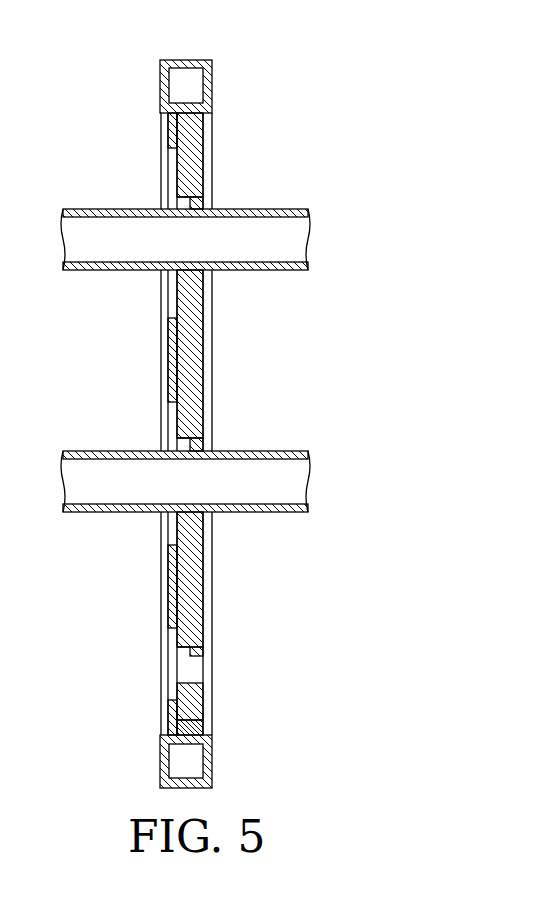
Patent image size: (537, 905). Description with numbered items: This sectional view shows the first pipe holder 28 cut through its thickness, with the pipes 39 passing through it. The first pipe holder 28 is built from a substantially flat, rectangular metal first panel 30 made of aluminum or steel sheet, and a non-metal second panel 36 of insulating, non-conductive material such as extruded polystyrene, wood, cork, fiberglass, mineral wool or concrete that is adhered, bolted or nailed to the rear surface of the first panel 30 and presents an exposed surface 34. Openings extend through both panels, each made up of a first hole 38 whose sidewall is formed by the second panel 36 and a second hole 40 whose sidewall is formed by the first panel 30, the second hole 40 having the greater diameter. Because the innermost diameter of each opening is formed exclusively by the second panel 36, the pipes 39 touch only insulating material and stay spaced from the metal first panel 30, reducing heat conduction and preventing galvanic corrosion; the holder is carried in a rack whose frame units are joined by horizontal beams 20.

The horizontal beams 20 is at (163, 82).
The first pipe holder 28 is at (432, 90).
The first panel 30 is at (170, 130).
The exposed surface 34 is at (185, 357).
The second panel 36 is at (197, 130).
The first hole 38 is at (187, 198).
The pipes 39 is at (290, 270).
The second hole 40 is at (173, 148).